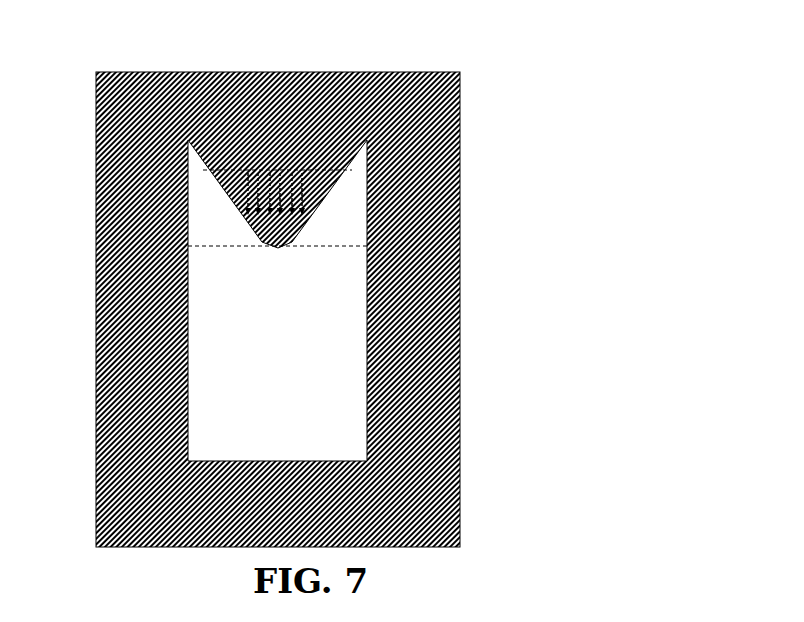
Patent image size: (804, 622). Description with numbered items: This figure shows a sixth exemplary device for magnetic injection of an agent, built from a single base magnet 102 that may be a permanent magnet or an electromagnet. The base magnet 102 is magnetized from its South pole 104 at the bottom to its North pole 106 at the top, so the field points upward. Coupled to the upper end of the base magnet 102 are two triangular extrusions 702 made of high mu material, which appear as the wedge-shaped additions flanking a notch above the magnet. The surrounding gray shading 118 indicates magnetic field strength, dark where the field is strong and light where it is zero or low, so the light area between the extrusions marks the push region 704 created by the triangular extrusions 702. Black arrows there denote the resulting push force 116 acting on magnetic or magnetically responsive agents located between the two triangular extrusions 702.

The base magnet 102 is at (348, 370).
The South pole 104 is at (293, 435).
The North pole 106 is at (292, 272).
The push force 116 is at (283, 167).
The gray shading 118 is at (413, 513).
The triangular extrusion 702 is at (237, 234).
The push region 704 is at (277, 222).